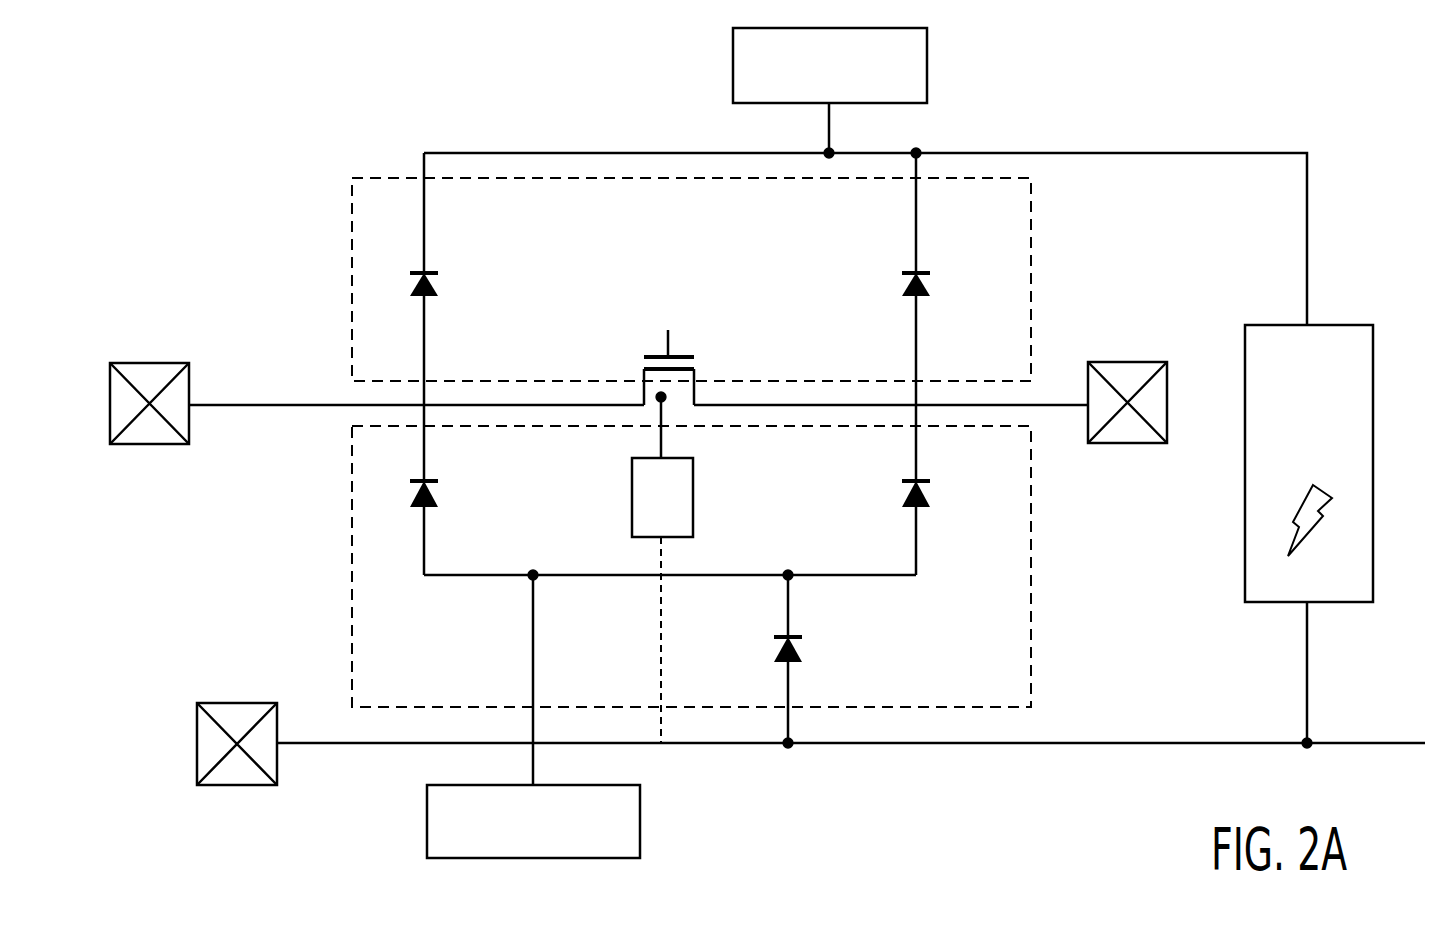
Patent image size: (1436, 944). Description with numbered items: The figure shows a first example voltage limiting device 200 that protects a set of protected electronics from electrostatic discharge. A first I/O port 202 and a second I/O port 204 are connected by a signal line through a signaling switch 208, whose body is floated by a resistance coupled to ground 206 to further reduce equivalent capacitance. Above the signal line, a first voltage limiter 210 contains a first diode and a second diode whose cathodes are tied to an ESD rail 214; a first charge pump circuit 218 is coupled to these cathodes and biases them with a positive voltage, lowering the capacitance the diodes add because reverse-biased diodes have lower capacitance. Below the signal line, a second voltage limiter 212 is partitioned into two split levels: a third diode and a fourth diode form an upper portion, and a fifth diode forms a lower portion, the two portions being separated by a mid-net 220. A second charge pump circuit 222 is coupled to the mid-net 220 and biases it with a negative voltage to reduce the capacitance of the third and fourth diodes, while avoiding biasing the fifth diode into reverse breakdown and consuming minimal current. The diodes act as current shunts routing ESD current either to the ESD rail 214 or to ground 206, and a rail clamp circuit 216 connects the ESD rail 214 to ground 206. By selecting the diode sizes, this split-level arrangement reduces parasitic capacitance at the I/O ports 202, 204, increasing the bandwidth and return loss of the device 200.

The voltage limiting device 200 is at (148, 162).
The first I/O port 202 is at (131, 445).
The second I/O port 204 is at (1125, 445).
The ground 206 is at (197, 752).
The signaling switch 208 is at (680, 353).
The first voltage limiter 210 is at (352, 233).
The second voltage limiter 212 is at (352, 577).
The ESD rail 214 is at (1003, 153).
The rail clamp circuit 216 is at (1245, 555).
The first charge pump circuit 218 is at (733, 62).
The mid-net 220 is at (865, 578).
The second charge pump circuit 222 is at (427, 806).